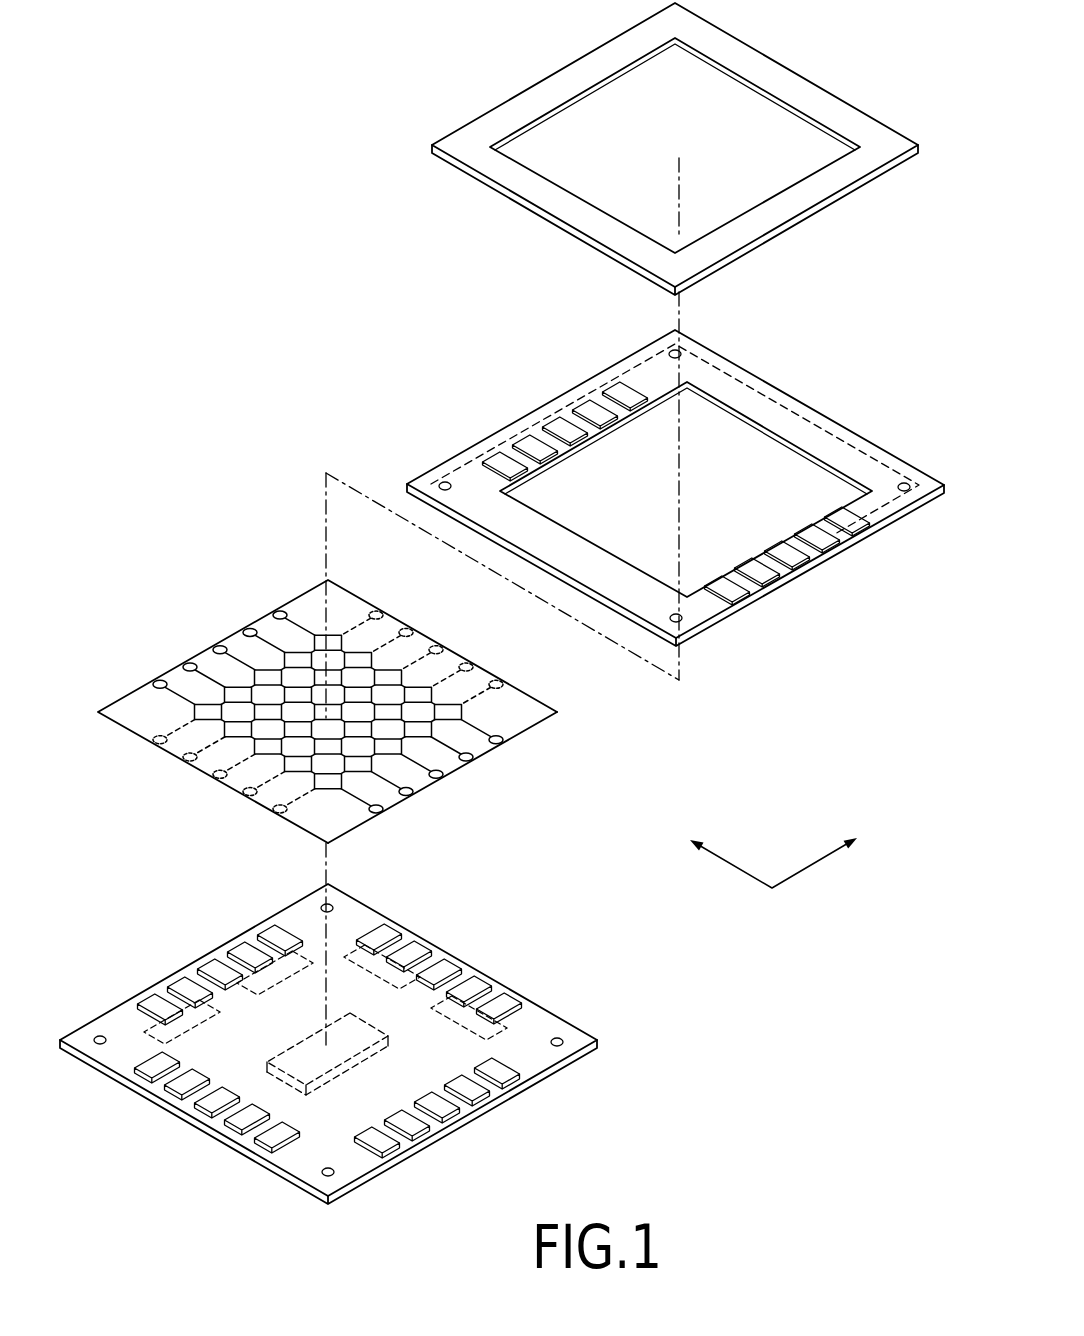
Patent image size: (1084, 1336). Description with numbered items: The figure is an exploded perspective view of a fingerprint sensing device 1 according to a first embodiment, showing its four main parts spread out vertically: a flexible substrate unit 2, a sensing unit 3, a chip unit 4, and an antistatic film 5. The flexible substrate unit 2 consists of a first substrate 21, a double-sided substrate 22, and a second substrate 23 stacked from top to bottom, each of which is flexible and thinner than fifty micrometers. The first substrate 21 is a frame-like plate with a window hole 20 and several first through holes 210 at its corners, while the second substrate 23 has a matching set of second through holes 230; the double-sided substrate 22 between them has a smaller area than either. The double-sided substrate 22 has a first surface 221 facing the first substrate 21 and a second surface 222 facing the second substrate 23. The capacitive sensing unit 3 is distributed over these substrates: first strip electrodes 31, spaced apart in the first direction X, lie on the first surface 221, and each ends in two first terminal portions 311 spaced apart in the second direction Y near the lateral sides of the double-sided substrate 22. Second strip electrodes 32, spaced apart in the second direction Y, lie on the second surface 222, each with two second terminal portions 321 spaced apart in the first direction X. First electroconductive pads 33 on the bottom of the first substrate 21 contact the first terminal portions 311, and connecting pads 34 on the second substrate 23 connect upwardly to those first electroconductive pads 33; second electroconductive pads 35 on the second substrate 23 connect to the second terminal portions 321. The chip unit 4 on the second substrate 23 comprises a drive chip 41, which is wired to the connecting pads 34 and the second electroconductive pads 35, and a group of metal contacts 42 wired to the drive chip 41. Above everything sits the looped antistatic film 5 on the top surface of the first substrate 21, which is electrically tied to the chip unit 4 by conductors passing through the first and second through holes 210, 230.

The fingerprint sensing device 1 is at (498, 621).
The flexible substrate unit 2 is at (498, 776).
The sensing unit 3 is at (320, 692).
The chip unit 4 is at (245, 1126).
The antistatic film 5 is at (842, 118).
The window hole 20 is at (709, 463).
The first substrate 21 is at (639, 505).
The double-sided substrate 22 is at (320, 759).
The second substrate 23 is at (340, 1040).
The first strip electrodes 31 is at (233, 618).
The second strip electrodes 32 is at (172, 766).
The first electroconductive pads 33 is at (806, 564).
The connecting pads 34 is at (460, 1108).
The second electroconductive pads 35 is at (430, 943).
The drive chip 41 is at (300, 1095).
The metal contacts 42 is at (242, 1138).
The first through holes 210 is at (447, 481).
The first surface 221 is at (130, 717).
The second surface 222 is at (352, 838).
The second through holes 230 is at (323, 903).
The first terminal portions 311 is at (437, 777).
The second terminal portions 321 is at (407, 630).